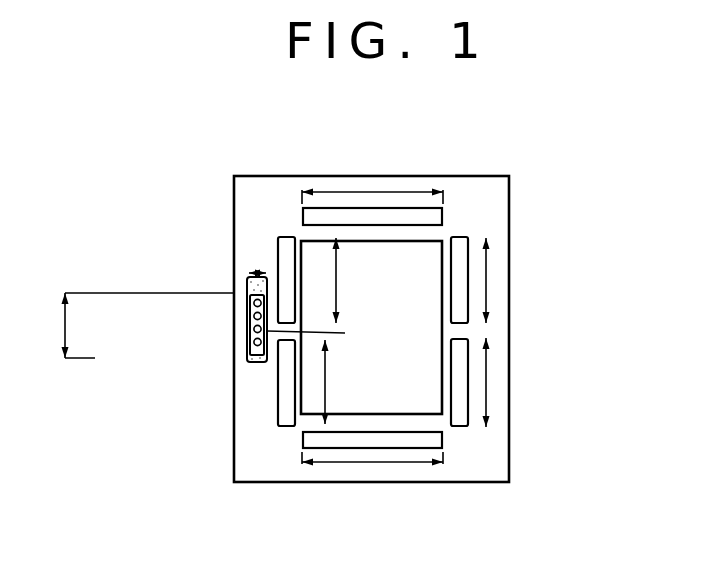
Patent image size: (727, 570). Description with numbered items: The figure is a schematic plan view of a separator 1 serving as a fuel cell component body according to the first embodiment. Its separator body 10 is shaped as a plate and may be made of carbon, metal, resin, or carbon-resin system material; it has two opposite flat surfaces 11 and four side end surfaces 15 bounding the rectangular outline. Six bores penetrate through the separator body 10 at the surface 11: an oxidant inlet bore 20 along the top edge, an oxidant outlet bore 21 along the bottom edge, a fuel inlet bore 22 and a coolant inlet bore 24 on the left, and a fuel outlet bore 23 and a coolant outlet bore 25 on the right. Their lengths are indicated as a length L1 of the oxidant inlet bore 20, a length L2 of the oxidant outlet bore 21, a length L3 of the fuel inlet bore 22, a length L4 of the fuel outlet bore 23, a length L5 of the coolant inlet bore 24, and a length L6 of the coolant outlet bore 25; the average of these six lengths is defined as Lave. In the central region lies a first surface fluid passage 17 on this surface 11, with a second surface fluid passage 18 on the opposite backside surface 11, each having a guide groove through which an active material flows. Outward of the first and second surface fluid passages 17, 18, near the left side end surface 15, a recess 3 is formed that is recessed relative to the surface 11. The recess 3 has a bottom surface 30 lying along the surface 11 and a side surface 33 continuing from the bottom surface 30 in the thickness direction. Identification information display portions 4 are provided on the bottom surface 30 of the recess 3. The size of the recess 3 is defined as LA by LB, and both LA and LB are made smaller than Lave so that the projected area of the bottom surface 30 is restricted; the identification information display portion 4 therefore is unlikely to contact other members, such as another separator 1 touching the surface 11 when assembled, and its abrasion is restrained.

The separator 1 is at (512, 210).
The recess 3 is at (257, 365).
The identification information display portion 4 is at (252, 321).
The separator body 10 is at (502, 246).
The flat surface 11 is at (497, 442).
The side end surface 15 is at (477, 175).
The first surface fluid passage 17 is at (484, 327).
The second surface fluid passage 18 is at (418, 338).
The oxidant inlet bore 20 is at (396, 218).
The oxidant outlet bore 21 is at (403, 445).
The fuel inlet bore 22 is at (282, 390).
The fuel outlet bore 23 is at (462, 287).
The coolant inlet bore 24 is at (287, 258).
The coolant outlet bore 25 is at (458, 392).
The bottom surface 30 is at (252, 355).
The side surface 33 is at (128, 346).
The length of oxidant inlet bore L1 is at (348, 193).
The length of oxidant outlet bore L2 is at (350, 463).
The length of fuel inlet bore L3 is at (326, 384).
The length of fuel outlet bore L4 is at (487, 273).
The length of coolant inlet bore L5 is at (337, 280).
The length of coolant outlet bore L6 is at (487, 367).
The recess dimension LA is at (130, 325).
The recess dimension LB is at (258, 272).